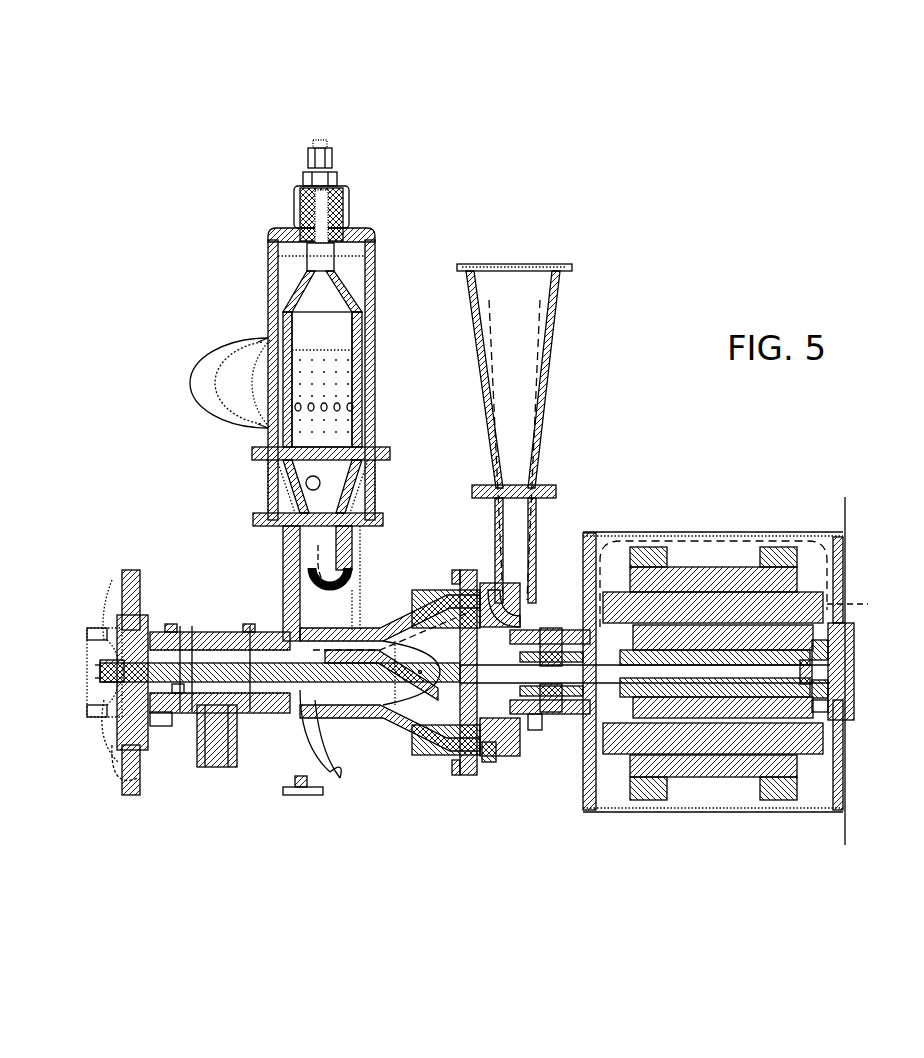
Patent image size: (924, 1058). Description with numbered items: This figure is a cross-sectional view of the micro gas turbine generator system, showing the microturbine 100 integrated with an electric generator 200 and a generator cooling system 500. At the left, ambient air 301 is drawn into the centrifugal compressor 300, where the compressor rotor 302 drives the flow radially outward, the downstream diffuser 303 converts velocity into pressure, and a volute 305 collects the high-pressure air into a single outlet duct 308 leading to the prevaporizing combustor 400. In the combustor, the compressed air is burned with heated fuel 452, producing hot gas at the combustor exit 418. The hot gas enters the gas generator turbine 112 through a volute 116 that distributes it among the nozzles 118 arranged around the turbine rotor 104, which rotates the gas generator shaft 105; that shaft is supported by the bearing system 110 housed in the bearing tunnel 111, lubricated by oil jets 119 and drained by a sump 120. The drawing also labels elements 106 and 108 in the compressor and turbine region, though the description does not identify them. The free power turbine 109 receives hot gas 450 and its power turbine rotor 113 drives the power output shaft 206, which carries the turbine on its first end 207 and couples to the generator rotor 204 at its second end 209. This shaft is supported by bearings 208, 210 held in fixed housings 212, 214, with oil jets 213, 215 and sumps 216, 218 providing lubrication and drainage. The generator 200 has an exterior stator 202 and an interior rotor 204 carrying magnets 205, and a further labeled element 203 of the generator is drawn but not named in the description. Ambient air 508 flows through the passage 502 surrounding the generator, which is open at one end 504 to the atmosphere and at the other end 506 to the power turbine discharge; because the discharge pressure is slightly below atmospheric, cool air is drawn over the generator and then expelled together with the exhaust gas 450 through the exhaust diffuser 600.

The microturbine 100 is at (211, 296).
The turbine rotor 104 is at (325, 708).
The gas generator shaft 105 is at (178, 690).
The inlet 106 is at (100, 668).
The impeller 108 is at (340, 683).
The free power turbine 109 is at (393, 705).
The bearing system 110 is at (194, 706).
The bearing tunnel 111 is at (221, 633).
The gas generator turbine 112 is at (308, 797).
The power turbine rotor 113 is at (490, 762).
The volute 116 is at (325, 770).
The nozzles 118 is at (298, 790).
The oil jets 119 is at (192, 632).
The sump 120 is at (170, 716).
The electric generator 200 is at (700, 532).
The stator 202 is at (654, 598).
The stator core 203 is at (725, 598).
The rotor 204 is at (728, 706).
The magnets 205 is at (705, 720).
The power output shaft 206 is at (520, 756).
The first end 207 is at (445, 692).
The bearing 208 is at (550, 714).
The second end 209 is at (855, 662).
The bearing 210 is at (815, 702).
The fixed housing 212 is at (540, 732).
The oil jet 213 is at (556, 630).
The fixed housing 214 is at (830, 688).
The oil jet 215 is at (830, 652).
The sump 216 is at (601, 565).
The sump 218 is at (830, 706).
The compressor 300 is at (116, 612).
The ambient air 301 is at (74, 688).
The compressor rotor 302 is at (118, 716).
The diffuser 303 is at (140, 742).
The volute 305 is at (128, 590).
The outlet duct 308 is at (225, 345).
The prevaporizing combustor 400 is at (376, 296).
The combustor exit 418 is at (305, 483).
The hot gas 450 is at (490, 278).
The fuel 452 is at (302, 138).
The generator cooling system 500 is at (860, 553).
The passage 502 is at (757, 556).
The open end 504 is at (843, 592).
The power turbine discharge 506 is at (522, 612).
The ambient air 508 is at (539, 278).
The exhaust diffuser 600 is at (547, 362).